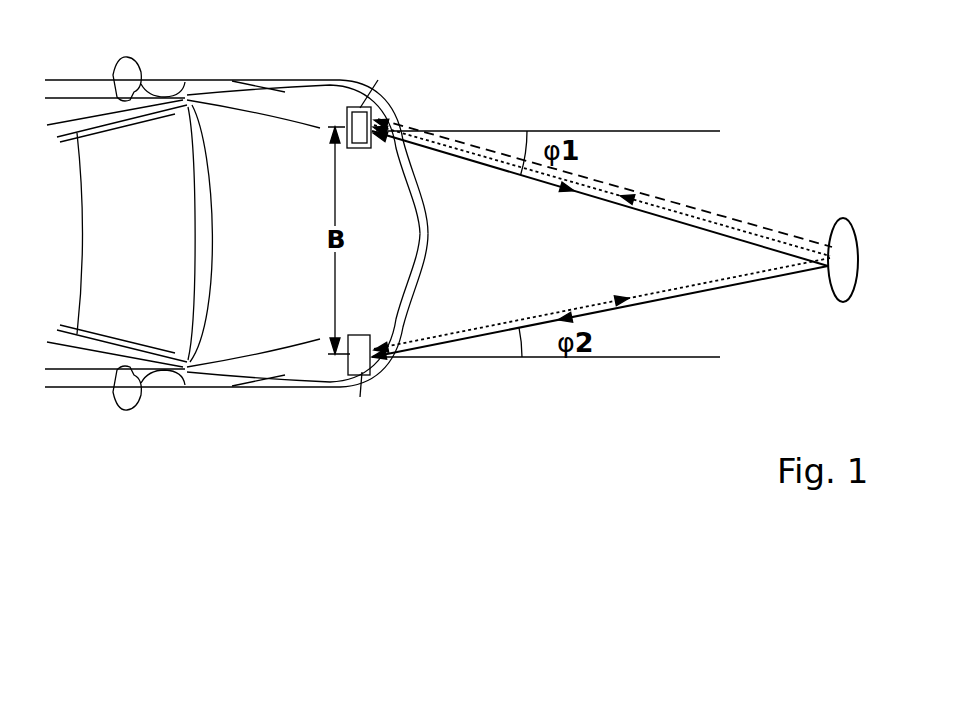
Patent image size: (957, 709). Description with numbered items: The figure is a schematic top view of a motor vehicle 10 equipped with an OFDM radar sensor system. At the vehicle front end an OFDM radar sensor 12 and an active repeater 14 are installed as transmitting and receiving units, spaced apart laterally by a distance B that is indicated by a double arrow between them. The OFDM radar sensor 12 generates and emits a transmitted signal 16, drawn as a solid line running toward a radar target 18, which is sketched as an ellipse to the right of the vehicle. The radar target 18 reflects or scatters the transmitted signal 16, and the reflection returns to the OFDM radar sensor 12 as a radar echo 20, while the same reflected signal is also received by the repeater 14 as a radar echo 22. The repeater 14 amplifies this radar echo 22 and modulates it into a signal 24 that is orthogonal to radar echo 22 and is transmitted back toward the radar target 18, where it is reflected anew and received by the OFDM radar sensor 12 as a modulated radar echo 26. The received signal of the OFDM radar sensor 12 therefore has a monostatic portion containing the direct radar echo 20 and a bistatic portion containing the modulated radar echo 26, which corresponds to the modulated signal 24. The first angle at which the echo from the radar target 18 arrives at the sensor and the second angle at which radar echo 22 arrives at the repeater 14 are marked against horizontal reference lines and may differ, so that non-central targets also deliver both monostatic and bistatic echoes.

The motor vehicle 10 is at (270, 400).
The OFDM radar sensor 12 is at (359, 150).
The repeater 14 is at (358, 334).
The transmitted signal 16 is at (452, 156).
The radar target 18 is at (841, 218).
The radar echo 20 is at (490, 150).
The radar echo 22 is at (450, 342).
The signal 24 is at (484, 327).
The modulated radar echo 26 is at (687, 222).